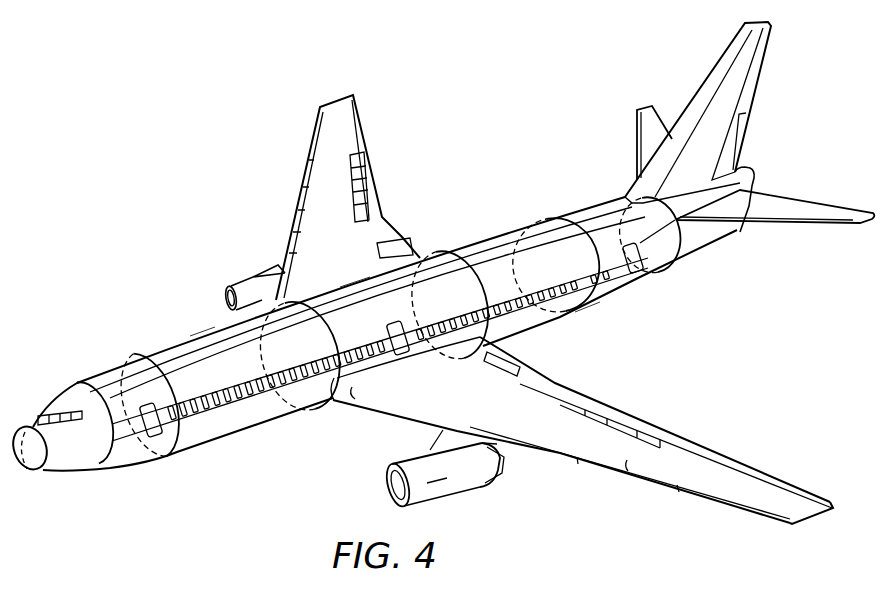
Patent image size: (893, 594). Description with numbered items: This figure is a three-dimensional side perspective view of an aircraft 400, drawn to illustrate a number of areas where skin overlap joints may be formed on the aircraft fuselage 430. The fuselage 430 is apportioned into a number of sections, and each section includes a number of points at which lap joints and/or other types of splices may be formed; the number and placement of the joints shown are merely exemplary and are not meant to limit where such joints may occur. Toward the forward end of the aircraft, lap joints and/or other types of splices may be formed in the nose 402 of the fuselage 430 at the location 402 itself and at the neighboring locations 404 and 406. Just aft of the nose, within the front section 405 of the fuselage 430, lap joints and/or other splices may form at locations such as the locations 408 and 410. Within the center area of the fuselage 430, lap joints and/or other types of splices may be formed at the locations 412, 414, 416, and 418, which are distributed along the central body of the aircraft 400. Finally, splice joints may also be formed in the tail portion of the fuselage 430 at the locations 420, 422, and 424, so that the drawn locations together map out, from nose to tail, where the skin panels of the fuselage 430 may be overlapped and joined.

The aircraft 400 is at (440, 278).
The nose 402 is at (50, 410).
The location 404 is at (72, 430).
The front section 405 is at (104, 336).
The location 406 is at (113, 453).
The location 408 is at (180, 437).
The location 410 is at (278, 438).
The location 412 is at (460, 245).
The location 414 is at (203, 328).
The location 416 is at (560, 340).
The location 418 is at (603, 273).
The location 420 is at (573, 217).
The location 422 is at (613, 248).
The location 424 is at (667, 228).
The fuselage 430 is at (341, 273).